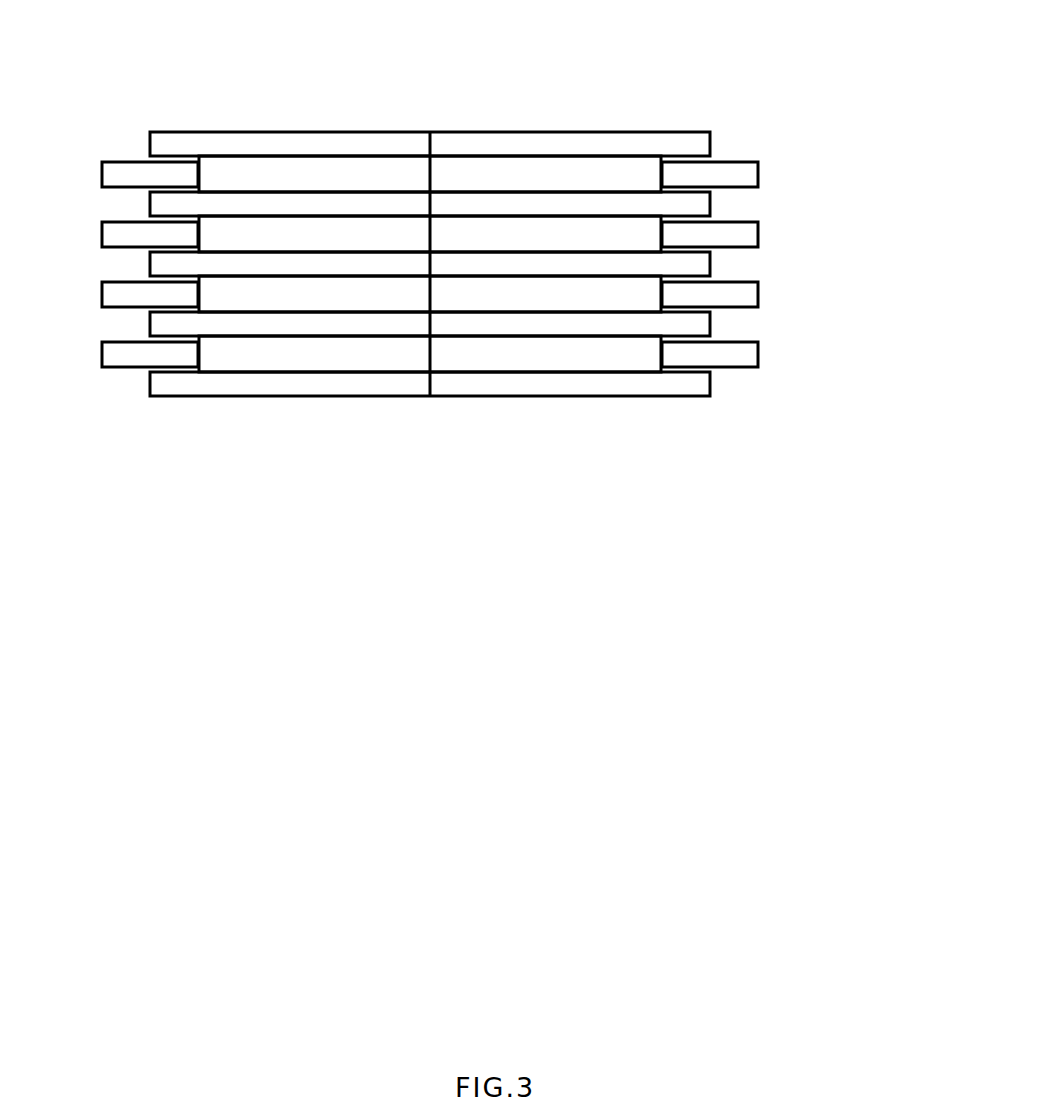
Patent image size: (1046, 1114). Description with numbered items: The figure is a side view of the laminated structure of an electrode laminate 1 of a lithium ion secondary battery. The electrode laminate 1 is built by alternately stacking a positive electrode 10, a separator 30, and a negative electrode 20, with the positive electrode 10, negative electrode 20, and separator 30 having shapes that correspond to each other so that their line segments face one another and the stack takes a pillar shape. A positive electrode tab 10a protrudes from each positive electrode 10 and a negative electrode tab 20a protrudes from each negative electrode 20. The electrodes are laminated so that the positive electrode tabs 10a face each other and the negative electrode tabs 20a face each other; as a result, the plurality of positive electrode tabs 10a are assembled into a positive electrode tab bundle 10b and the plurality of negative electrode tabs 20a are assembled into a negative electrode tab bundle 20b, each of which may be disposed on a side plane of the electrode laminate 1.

The electrode laminate 1 is at (612, 72).
The positive electrode 10 is at (218, 173).
The positive electrode tab 10a is at (758, 173).
The positive electrode tab bundle 10b is at (850, 295).
The negative electrode 20 is at (218, 233).
The negative electrode tab 20a is at (758, 233).
The negative electrode tab bundle 20b is at (848, 237).
The separator 30 is at (710, 143).